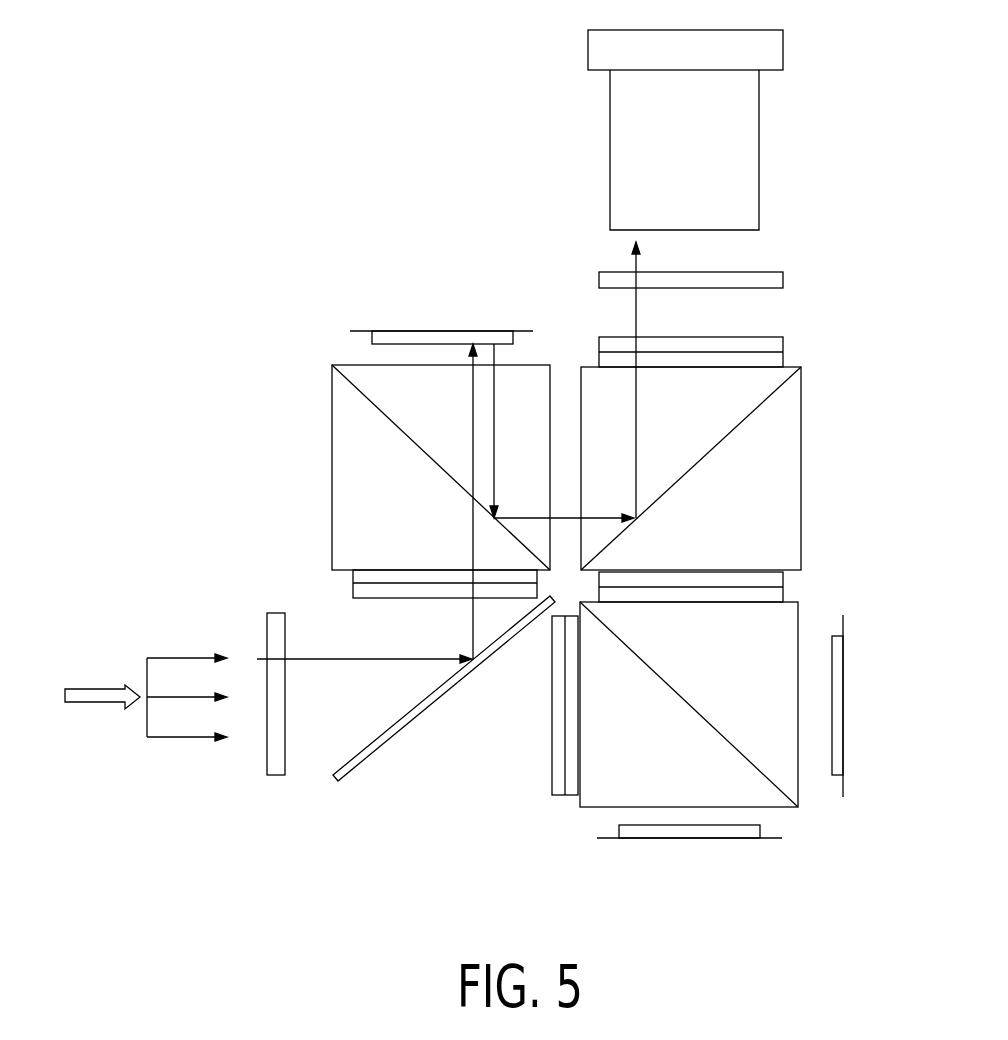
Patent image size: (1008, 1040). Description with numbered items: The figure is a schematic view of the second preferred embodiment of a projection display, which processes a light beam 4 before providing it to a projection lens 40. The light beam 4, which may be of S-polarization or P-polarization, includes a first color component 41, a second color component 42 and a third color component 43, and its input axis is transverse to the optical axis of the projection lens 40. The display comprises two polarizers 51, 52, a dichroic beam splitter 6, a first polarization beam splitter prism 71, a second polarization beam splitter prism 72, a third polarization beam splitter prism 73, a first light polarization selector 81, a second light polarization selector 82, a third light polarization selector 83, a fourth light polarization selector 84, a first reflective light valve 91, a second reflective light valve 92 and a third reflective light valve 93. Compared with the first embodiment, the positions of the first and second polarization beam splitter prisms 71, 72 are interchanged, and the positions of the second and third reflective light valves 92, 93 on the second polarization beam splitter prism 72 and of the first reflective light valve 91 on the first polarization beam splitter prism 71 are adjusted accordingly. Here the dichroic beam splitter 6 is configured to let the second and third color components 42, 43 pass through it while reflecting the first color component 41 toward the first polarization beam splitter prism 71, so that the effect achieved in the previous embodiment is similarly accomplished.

The light beam 4 is at (105, 700).
The dichroic beam splitter 6 is at (385, 739).
The projection lens 40 is at (753, 180).
The first color component 41 is at (188, 657).
The second color component 42 is at (172, 698).
The third color component 43 is at (192, 737).
The polarizer 51 is at (278, 615).
The polarizer 52 is at (762, 280).
The first polarization beam splitter prism 71 is at (352, 463).
The second polarization beam splitter prism 72 is at (780, 642).
The third polarization beam splitter prism 73 is at (784, 420).
The first light polarization selector 81 is at (555, 784).
The second light polarization selector 82 is at (755, 582).
The third light polarization selector 83 is at (767, 343).
The fourth light polarization selector 84 is at (382, 593).
The first reflective light valve 91 is at (422, 330).
The second reflective light valve 92 is at (833, 770).
The third reflective light valve 93 is at (707, 837).